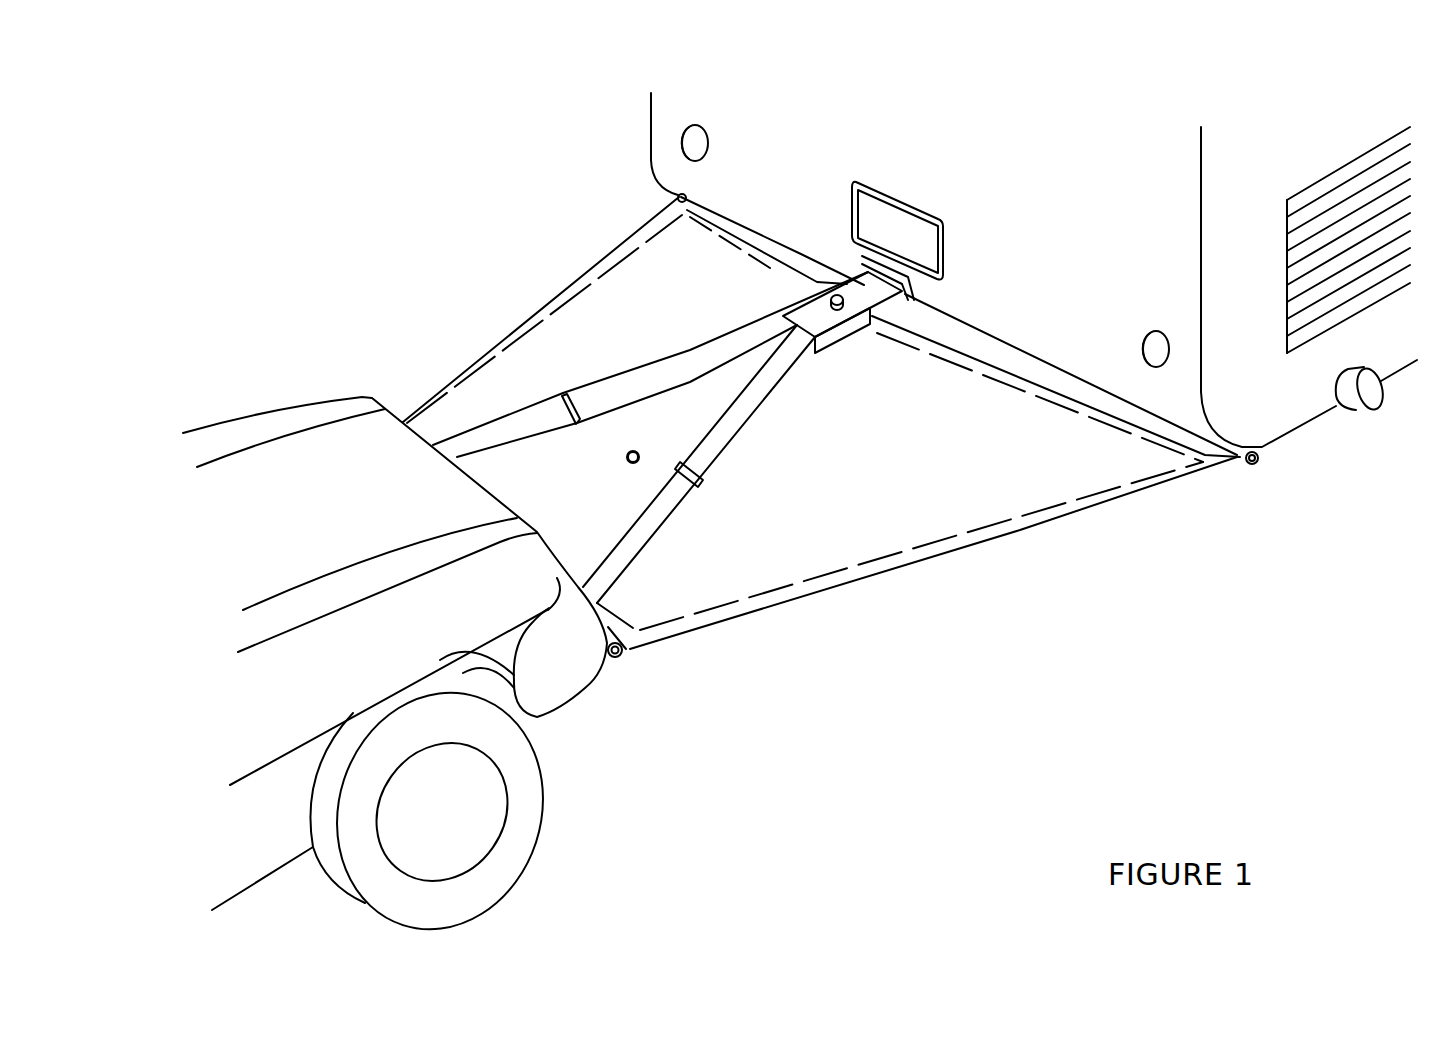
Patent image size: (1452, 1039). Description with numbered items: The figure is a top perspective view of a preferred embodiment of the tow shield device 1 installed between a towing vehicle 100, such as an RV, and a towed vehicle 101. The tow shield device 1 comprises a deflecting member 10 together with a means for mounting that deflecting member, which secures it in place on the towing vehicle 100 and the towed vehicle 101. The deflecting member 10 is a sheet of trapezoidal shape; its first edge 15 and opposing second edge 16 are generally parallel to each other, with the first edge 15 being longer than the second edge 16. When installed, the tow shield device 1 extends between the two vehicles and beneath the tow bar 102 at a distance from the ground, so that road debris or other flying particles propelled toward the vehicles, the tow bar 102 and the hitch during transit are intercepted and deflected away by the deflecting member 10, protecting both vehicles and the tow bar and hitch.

The tow shield device 1 is at (1085, 533).
The deflecting member 10 is at (850, 437).
The first edge 15 is at (968, 360).
The second edge 16 is at (627, 620).
The towing vehicle 100 is at (608, 108).
The towed vehicle 101 is at (260, 392).
The tow bar 102 is at (648, 362).